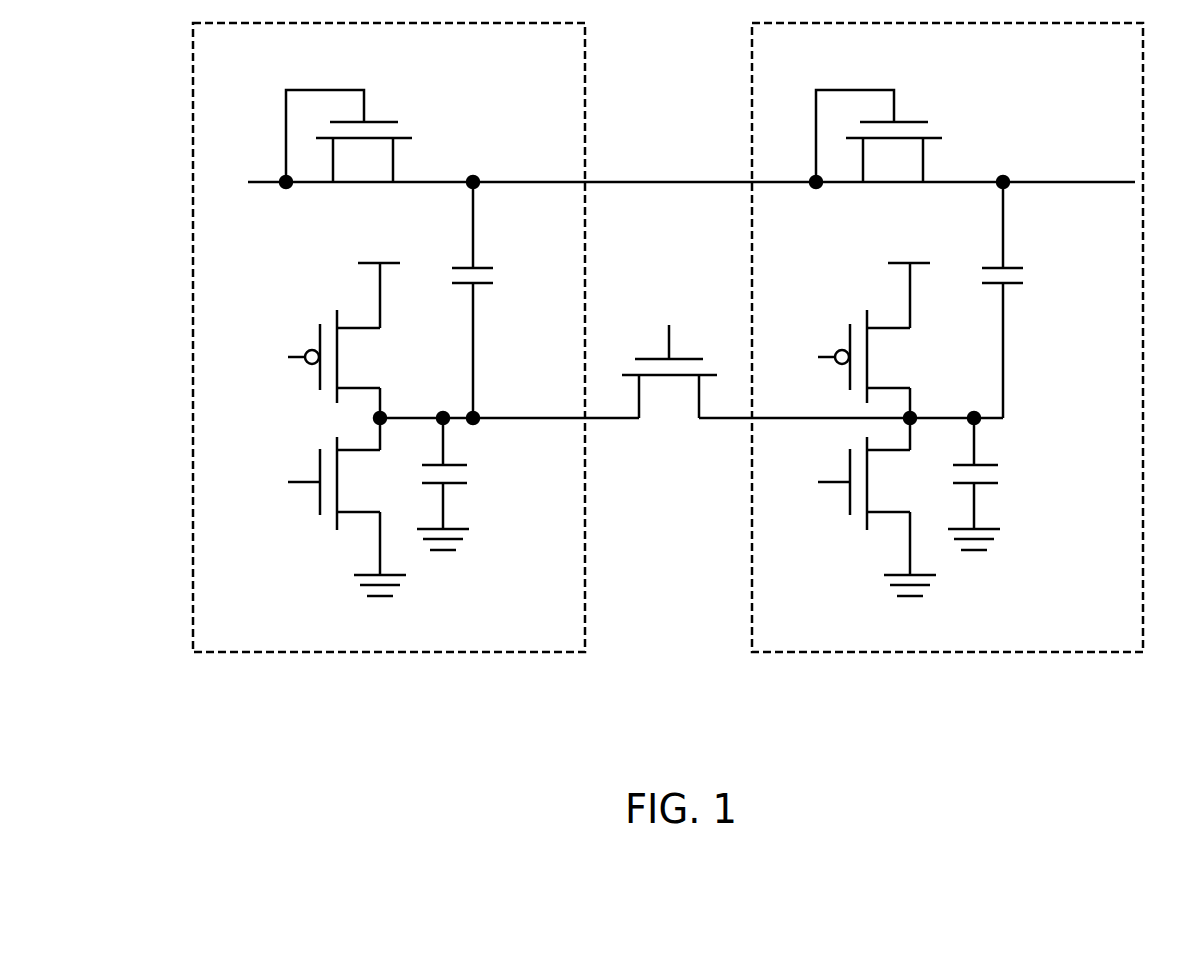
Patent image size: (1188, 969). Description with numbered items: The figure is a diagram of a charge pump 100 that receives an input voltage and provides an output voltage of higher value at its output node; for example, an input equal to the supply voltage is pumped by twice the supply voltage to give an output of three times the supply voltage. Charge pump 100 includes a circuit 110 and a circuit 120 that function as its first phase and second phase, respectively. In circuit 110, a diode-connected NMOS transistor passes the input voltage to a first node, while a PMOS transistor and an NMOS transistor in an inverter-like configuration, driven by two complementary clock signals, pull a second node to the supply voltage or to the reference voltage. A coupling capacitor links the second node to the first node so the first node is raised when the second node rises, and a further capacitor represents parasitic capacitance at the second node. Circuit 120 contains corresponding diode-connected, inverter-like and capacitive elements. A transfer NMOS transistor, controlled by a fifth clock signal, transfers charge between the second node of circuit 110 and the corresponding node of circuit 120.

The charge pump 100 is at (668, 370).
The circuit 110 is at (575, 60).
The circuit 120 is at (1133, 60).